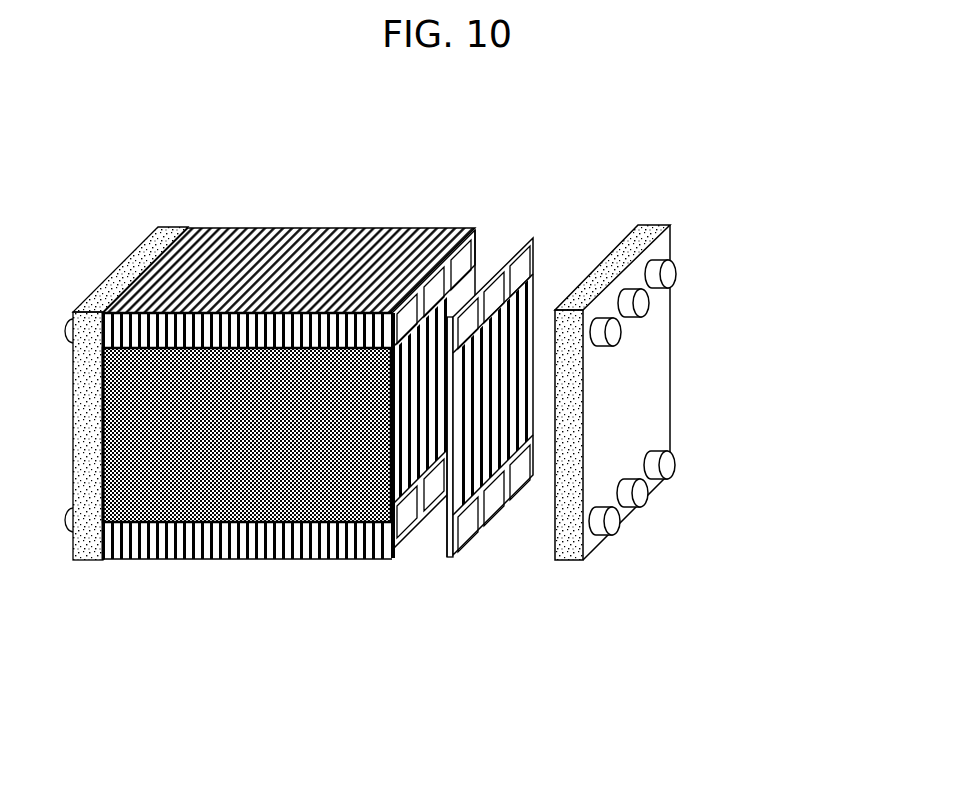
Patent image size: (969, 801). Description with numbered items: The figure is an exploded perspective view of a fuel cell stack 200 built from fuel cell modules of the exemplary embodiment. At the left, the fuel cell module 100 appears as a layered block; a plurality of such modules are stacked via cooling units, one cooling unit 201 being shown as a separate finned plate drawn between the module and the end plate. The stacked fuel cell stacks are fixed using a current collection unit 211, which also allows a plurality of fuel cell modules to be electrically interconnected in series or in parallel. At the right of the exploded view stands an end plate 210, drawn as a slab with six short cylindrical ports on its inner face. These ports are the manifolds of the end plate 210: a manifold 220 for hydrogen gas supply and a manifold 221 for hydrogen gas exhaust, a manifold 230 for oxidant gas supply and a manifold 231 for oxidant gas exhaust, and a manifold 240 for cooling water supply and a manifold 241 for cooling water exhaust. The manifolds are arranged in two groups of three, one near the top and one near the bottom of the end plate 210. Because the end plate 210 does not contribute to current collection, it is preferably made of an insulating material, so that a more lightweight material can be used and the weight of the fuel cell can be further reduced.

The fuel cell module 100 is at (358, 362).
The fuel cell stack 200 is at (407, 707).
The cooling unit 201 is at (477, 418).
The end plate 210 is at (629, 226).
The current collection unit 211 is at (195, 518).
The manifold for hydrogen gas supply 220 is at (667, 465).
The manifold for hydrogen gas exhaust 221 is at (613, 332).
The manifold for oxidant gas supply 230 is at (668, 274).
The manifold for oxidant gas exhaust 231 is at (612, 521).
The manifold for cooling water supply 240 is at (641, 303).
The manifold for cooling water exhaust 241 is at (640, 493).